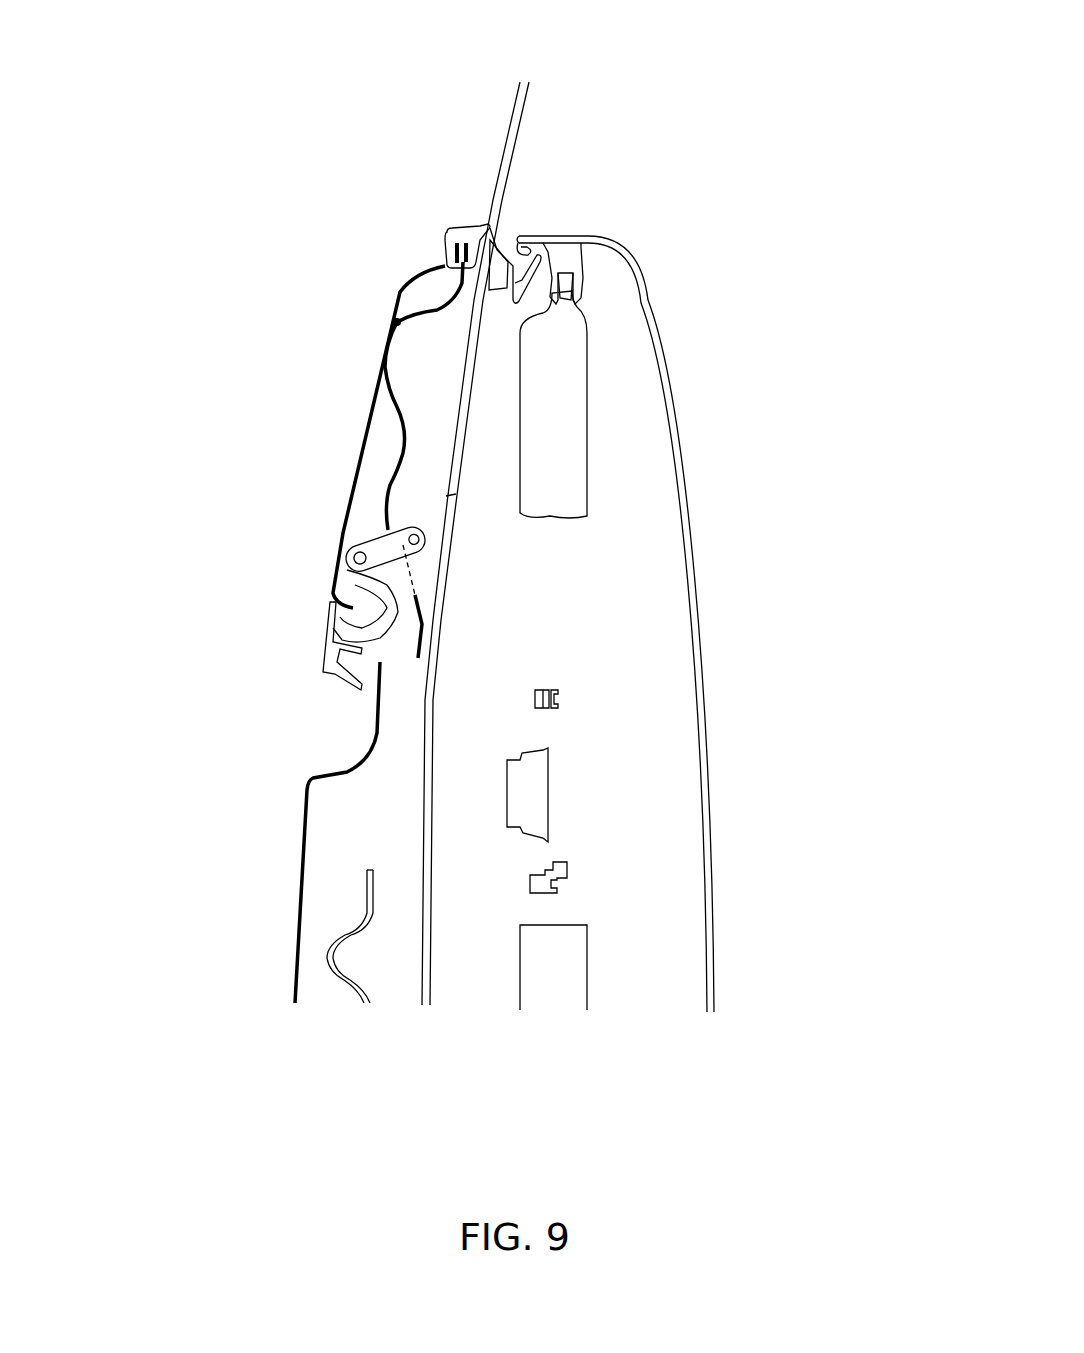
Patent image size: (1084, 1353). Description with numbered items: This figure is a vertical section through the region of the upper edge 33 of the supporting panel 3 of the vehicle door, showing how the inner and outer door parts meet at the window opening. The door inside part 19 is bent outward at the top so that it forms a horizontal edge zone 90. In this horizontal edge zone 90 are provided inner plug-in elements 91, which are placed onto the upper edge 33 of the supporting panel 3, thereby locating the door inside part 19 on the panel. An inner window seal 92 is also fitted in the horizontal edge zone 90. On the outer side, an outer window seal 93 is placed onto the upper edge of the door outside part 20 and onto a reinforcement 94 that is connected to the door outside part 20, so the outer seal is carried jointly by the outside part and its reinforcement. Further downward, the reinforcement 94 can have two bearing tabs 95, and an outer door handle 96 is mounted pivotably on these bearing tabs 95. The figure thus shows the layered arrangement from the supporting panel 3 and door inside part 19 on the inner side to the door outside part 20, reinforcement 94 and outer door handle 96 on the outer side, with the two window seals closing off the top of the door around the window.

The supporting panel 3 is at (553, 375).
The door inside part 19 is at (680, 470).
The door outside part 20 is at (337, 468).
The upper edge 33 is at (567, 289).
The horizontal edge zone 90 is at (573, 263).
The inner plug-in elements 91 is at (588, 240).
The inner window seal 92 is at (520, 274).
The outer window seal 93 is at (470, 232).
The reinforcement 94 is at (397, 322).
The bearing tabs 95 is at (372, 540).
The outer door handle 96 is at (340, 628).